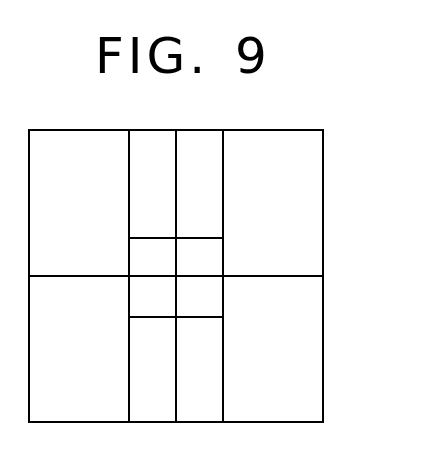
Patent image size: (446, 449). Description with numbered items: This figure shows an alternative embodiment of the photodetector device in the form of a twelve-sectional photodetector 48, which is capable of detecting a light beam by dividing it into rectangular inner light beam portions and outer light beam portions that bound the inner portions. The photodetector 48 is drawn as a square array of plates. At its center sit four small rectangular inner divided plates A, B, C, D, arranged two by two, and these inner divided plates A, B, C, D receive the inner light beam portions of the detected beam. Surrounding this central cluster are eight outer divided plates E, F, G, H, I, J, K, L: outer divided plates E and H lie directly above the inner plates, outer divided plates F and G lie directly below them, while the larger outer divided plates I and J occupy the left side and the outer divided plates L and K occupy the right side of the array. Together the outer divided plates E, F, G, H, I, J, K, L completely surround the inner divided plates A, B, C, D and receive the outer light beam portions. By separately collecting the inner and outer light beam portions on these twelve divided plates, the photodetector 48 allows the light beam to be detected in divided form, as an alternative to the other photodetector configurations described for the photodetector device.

The 12-sectional photodetector 48 is at (323, 220).
The inner divided plate A is at (152, 257).
The inner divided plate B is at (152, 296).
The inner divided plate C is at (199, 296).
The inner divided plate D is at (199, 257).
The outer divided plate E is at (152, 184).
The outer divided plate F is at (152, 369).
The outer divided plate G is at (199, 369).
The outer divided plate H is at (199, 184).
The outer divided plate I is at (79, 203).
The outer divided plate J is at (79, 349).
The outer divided plate K is at (273, 349).
The outer divided plate L is at (273, 203).